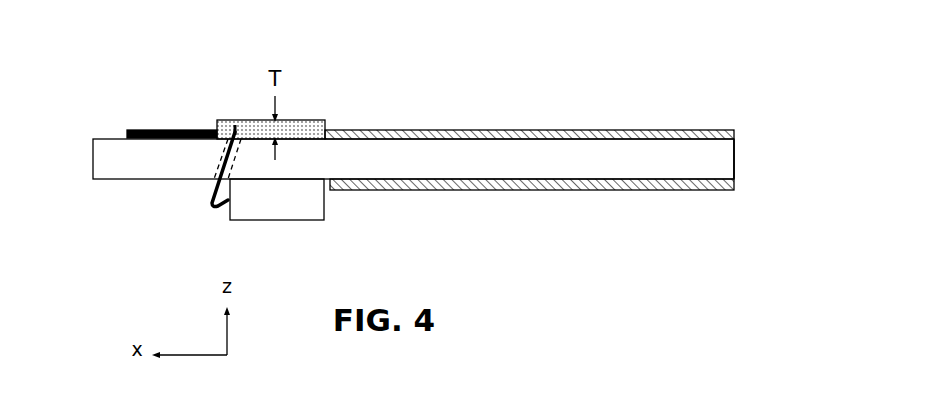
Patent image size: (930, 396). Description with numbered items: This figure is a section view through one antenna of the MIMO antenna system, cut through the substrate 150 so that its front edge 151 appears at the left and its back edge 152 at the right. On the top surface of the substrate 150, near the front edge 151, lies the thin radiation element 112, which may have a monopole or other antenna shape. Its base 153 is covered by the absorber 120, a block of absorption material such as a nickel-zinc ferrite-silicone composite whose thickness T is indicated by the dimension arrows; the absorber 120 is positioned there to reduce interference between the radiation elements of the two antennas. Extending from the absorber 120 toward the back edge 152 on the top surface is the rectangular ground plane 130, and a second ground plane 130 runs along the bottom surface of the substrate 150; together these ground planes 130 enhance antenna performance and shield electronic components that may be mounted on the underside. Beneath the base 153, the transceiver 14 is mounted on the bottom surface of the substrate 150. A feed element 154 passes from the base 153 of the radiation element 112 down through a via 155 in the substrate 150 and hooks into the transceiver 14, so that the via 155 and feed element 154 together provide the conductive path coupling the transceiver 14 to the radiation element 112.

The transceiver 14 is at (287, 220).
The radiation element 112 is at (160, 130).
The absorber 120 is at (308, 120).
The ground plane 130 is at (530, 130).
The substrate 150 is at (727, 166).
The front edge 151 is at (93, 145).
The back edge 152 is at (734, 158).
The base 153 is at (234, 131).
The feed element 154 is at (207, 193).
The via 155 is at (217, 162).